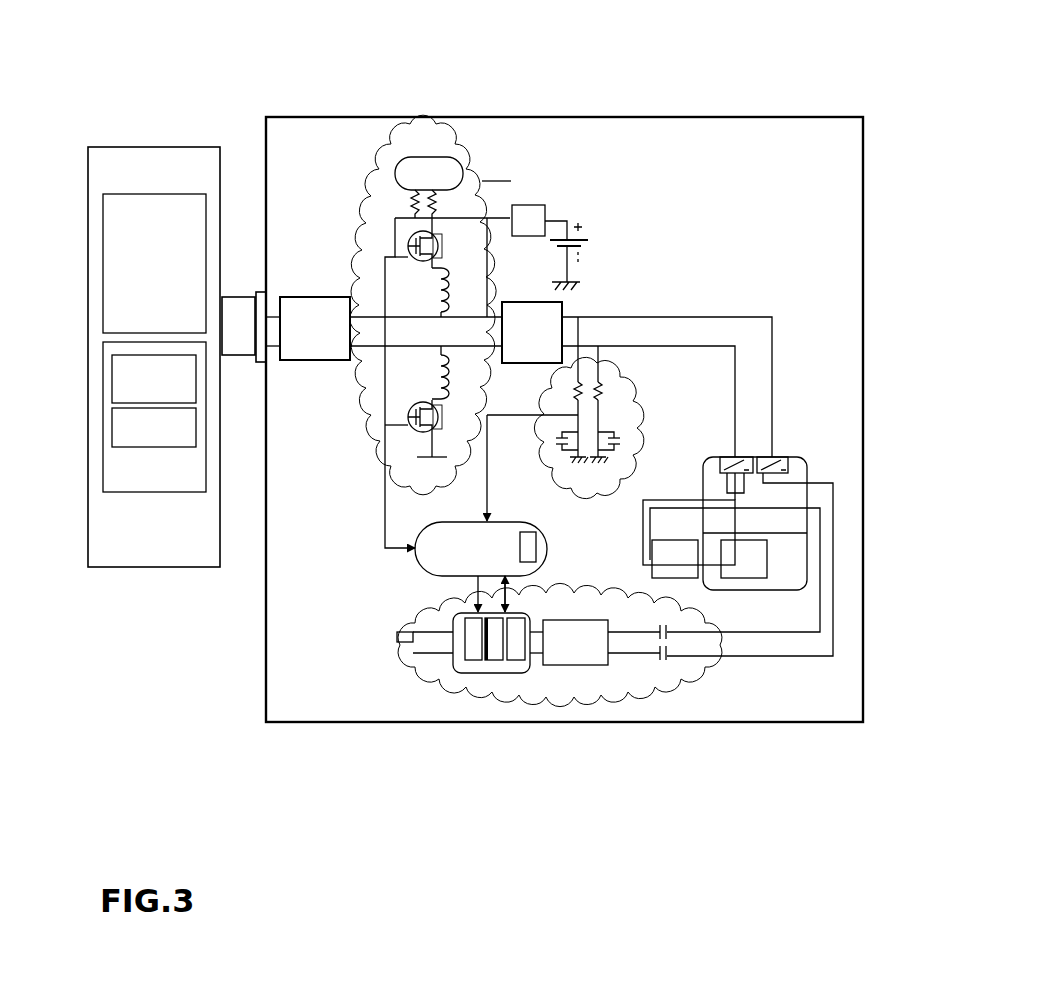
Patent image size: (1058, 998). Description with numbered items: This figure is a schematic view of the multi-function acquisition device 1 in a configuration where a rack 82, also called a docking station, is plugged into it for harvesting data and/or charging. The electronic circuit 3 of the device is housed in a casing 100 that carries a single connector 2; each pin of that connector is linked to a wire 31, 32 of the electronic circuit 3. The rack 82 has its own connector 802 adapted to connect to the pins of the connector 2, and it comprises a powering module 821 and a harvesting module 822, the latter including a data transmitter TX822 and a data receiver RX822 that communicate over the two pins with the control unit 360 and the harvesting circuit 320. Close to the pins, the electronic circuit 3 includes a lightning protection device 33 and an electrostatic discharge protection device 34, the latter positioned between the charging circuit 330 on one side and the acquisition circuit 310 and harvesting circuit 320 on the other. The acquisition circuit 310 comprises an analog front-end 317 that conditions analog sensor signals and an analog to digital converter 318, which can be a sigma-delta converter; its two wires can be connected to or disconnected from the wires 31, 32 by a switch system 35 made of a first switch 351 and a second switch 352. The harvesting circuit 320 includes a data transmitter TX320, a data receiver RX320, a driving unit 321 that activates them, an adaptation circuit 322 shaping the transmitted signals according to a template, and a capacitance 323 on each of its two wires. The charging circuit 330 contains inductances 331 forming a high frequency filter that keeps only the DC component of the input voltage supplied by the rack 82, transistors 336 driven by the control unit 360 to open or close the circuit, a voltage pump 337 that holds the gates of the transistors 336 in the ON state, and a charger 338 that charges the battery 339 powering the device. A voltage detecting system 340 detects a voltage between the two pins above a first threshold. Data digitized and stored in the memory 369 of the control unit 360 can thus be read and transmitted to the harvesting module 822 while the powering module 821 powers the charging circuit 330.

The multi-function acquisition device 1 is at (559, 365).
The casing 100 is at (559, 365).
The electronic circuit 3 is at (344, 163).
The connector 2 is at (270, 362).
The rack 82 is at (150, 147).
The powering module 821 is at (154, 263).
The harvesting module 822 is at (150, 493).
The data receiver RX822 is at (154, 379).
The data transmitter TX822 is at (154, 427).
The connector 802 is at (233, 358).
The lightning protection device 33 is at (315, 296).
The electrostatic discharge protection device 34 is at (531, 302).
The wire 31 is at (726, 316).
The wire 32 is at (644, 345).
The switch system 35 is at (788, 490).
The first switch 351 is at (732, 456).
The second switch 352 is at (782, 456).
The acquisition circuit 310 is at (713, 533).
The analog front-end 317 is at (656, 555).
The analog to digital converter 318 is at (746, 573).
The charging circuit 330 is at (424, 127).
The inductances 331 is at (459, 297).
The transistors 336 is at (408, 240).
The voltage pump 337 is at (458, 181).
The charger 338 is at (548, 205).
The battery 339 is at (592, 236).
The voltage detecting system 340 is at (636, 405).
The control unit 360 is at (471, 569).
The memory 369 is at (536, 549).
The harvesting circuit 320 is at (516, 651).
The driving unit 321 is at (485, 666).
The data transmitter TX320 is at (487, 662).
The data receiver RX320 is at (517, 662).
The adaptation circuit 322 is at (601, 656).
The capacitance 323 is at (668, 656).